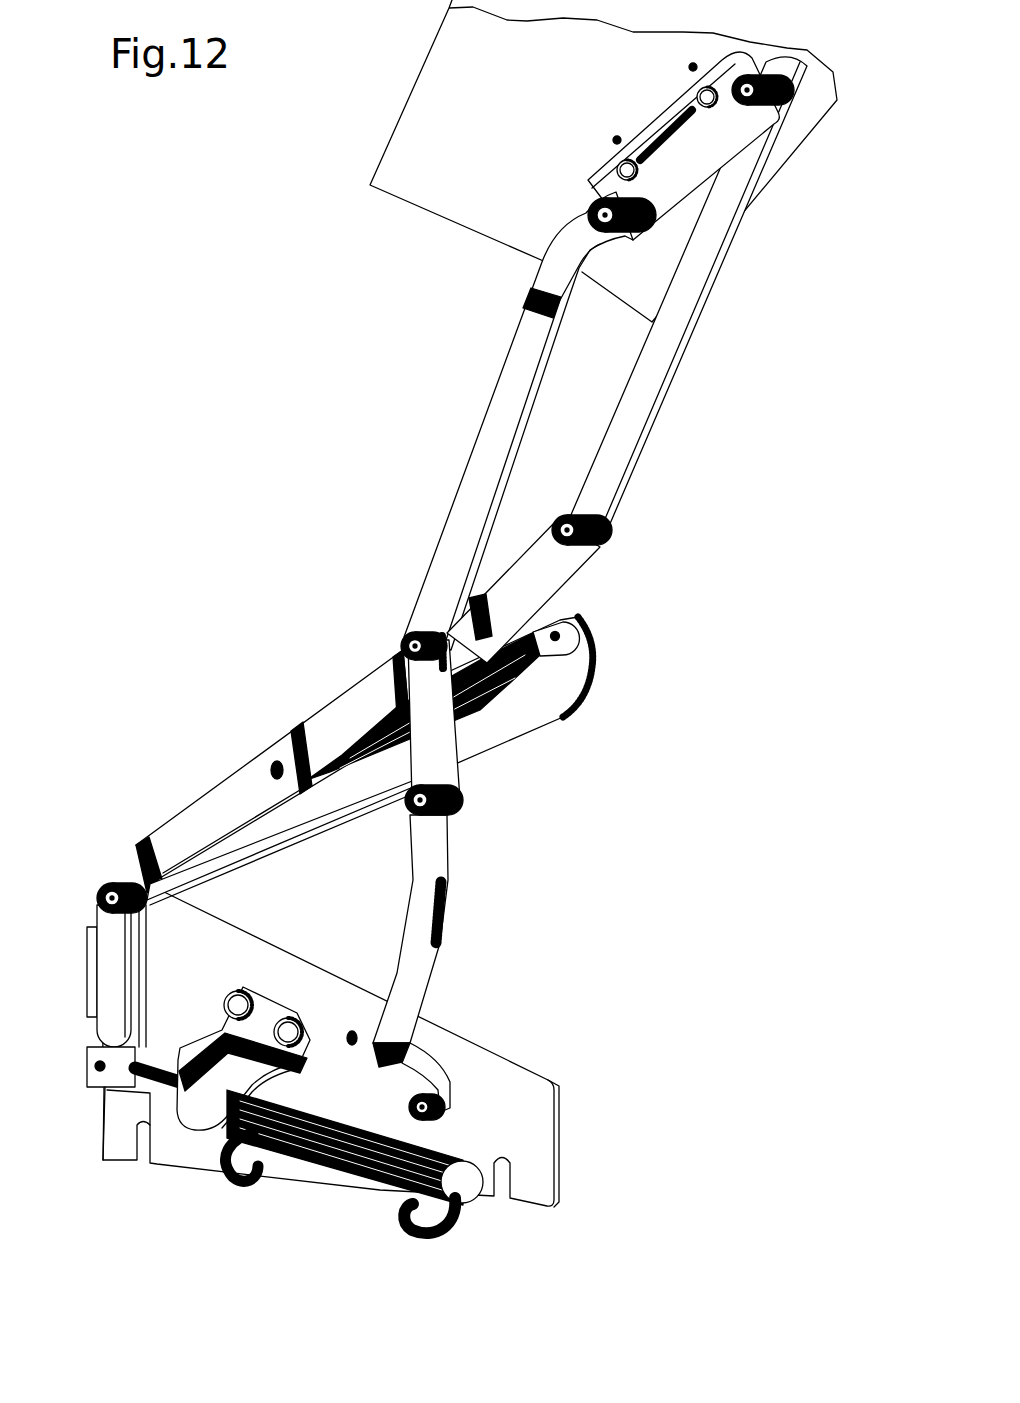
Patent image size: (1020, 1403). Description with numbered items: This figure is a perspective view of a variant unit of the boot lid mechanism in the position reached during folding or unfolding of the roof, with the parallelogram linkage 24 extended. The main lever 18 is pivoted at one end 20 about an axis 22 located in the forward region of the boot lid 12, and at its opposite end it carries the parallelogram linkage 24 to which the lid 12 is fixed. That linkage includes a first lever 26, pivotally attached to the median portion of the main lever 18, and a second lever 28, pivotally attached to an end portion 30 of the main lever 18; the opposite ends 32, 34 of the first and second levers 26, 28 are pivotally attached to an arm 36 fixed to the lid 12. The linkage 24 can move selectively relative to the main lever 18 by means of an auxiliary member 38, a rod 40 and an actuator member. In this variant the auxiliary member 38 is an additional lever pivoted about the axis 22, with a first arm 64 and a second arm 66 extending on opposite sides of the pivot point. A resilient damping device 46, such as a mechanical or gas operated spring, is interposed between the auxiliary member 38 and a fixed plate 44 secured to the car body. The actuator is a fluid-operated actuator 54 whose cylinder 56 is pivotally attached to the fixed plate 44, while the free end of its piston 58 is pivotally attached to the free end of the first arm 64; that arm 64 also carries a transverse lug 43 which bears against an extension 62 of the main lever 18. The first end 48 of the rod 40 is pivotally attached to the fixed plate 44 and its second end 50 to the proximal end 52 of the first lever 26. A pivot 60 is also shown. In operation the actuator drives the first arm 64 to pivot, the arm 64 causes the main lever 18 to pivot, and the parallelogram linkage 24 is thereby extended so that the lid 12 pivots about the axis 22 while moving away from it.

The boot lid 12 is at (405, 158).
The main lever 18 is at (287, 716).
The end of main lever 20 is at (140, 845).
The axis 22 is at (108, 880).
The parallelogram linkage 24 is at (597, 546).
The first lever 26 is at (438, 512).
The second lever 28 is at (722, 285).
The end portion of main lever 30 is at (620, 470).
The opposite end of first lever 32 is at (590, 215).
The opposite end of second lever 34 is at (783, 78).
The arm 36 is at (632, 125).
The auxiliary member 38 is at (323, 842).
The rod 40 is at (460, 905).
The transverse lug 43 is at (92, 965).
The fixed plate 44 is at (565, 1165).
The resilient damping device 46 is at (540, 622).
The first end of rod 48 is at (445, 1104).
The second end of rod 50 is at (435, 830).
The proximal end of first lever 52 is at (445, 790).
The fluid-operated actuator 54 is at (300, 1160).
The cylinder 56 is at (402, 1188).
The piston 58 is at (112, 1162).
The pivot pulley 60 is at (408, 640).
The extension of main lever 62 is at (120, 968).
The first arm 64 is at (135, 1060).
The second arm 66 is at (360, 773).